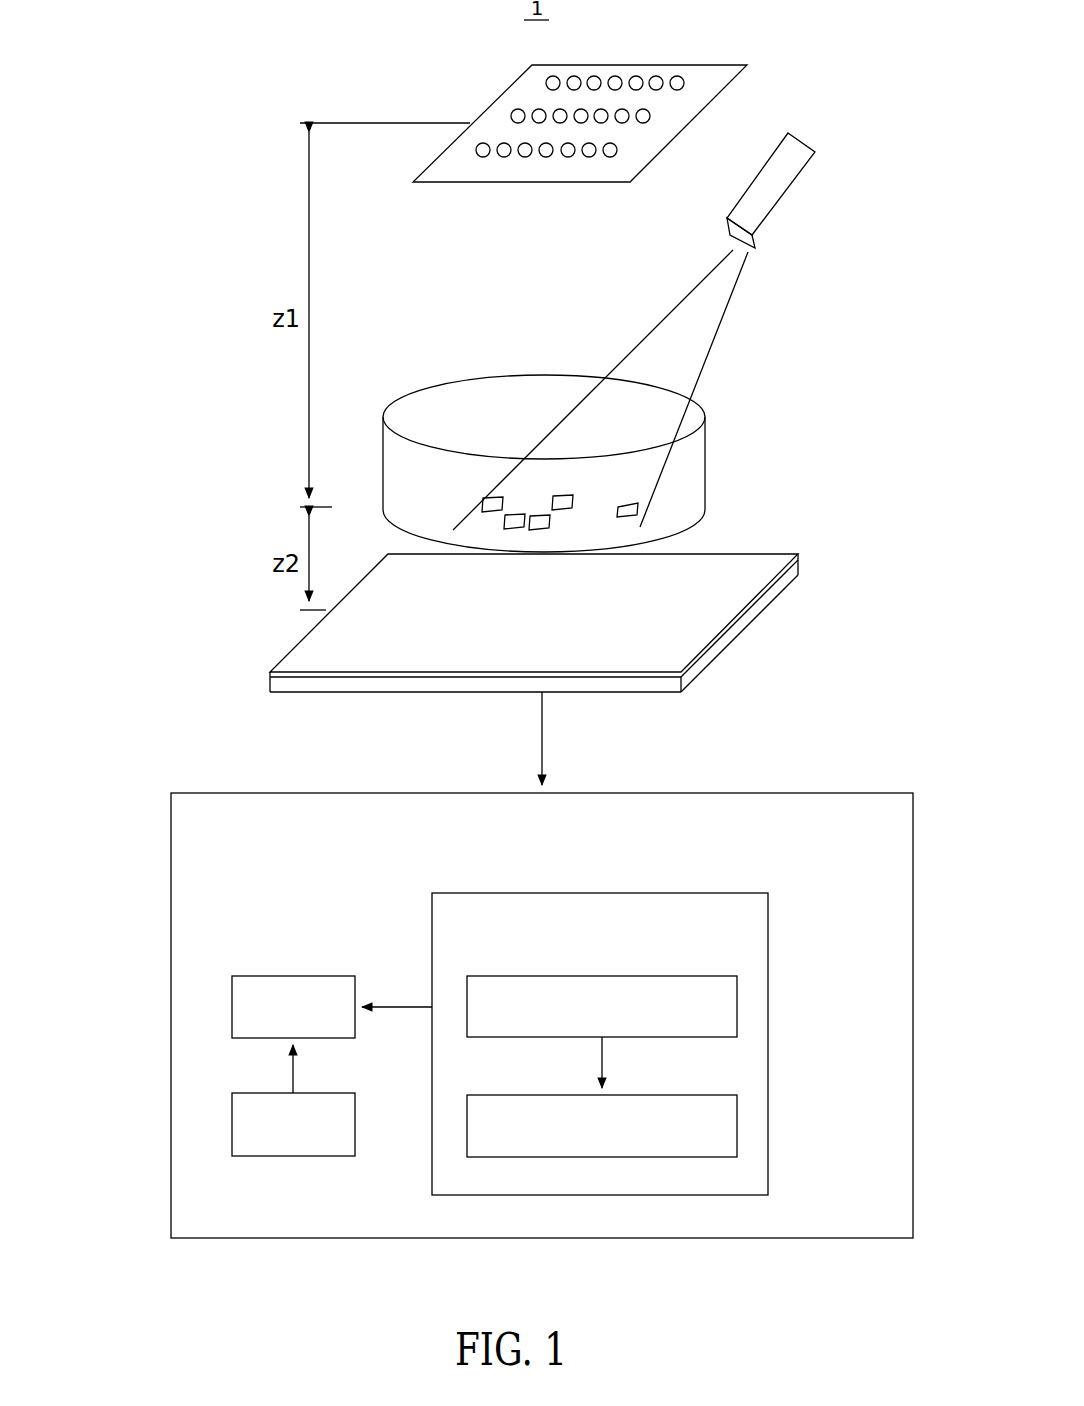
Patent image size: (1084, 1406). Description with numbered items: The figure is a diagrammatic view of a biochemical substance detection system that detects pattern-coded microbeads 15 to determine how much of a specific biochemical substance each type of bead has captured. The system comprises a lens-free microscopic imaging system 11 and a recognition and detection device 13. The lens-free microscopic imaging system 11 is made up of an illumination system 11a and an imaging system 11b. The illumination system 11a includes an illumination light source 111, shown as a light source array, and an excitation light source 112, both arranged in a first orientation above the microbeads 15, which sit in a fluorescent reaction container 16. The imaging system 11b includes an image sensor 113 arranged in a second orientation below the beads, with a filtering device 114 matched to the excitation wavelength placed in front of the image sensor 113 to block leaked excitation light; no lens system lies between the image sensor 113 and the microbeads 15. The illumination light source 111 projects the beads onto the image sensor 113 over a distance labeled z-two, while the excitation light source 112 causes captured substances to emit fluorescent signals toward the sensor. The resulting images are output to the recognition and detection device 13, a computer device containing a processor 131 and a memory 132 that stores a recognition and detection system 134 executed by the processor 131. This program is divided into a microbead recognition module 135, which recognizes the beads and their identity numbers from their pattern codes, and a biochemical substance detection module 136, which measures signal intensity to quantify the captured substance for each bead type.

The lens-free microscopic imaging system 11 is at (142, 431).
The illumination system 11a is at (266, 430).
The imaging system 11b is at (271, 627).
The illumination light source 111 is at (515, 97).
The excitation light source 112 is at (765, 190).
The image sensor 113 is at (758, 607).
The filtering device 114 is at (762, 563).
The microbeads 15 is at (630, 508).
The fluorescent reaction container 16 is at (705, 452).
The recognition and detection device 13 is at (795, 793).
The processor 131 is at (293, 975).
The memory 132 is at (293, 1157).
The recognition and detection system 134 is at (600, 893).
The microbead recognition module 135 is at (737, 1005).
The biochemical substance detection module 136 is at (737, 1125).